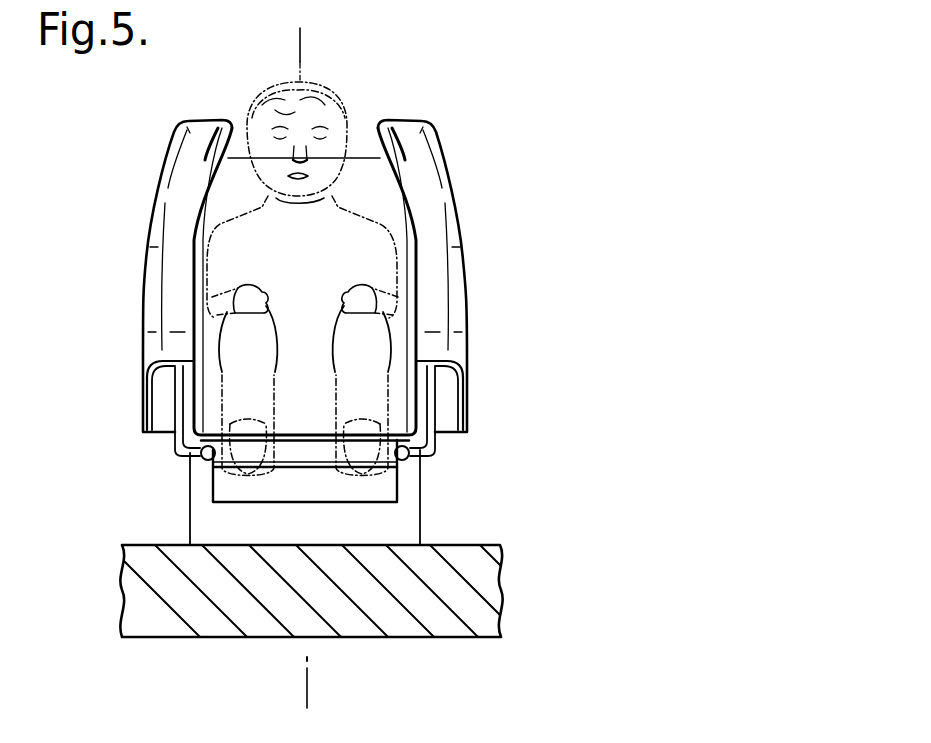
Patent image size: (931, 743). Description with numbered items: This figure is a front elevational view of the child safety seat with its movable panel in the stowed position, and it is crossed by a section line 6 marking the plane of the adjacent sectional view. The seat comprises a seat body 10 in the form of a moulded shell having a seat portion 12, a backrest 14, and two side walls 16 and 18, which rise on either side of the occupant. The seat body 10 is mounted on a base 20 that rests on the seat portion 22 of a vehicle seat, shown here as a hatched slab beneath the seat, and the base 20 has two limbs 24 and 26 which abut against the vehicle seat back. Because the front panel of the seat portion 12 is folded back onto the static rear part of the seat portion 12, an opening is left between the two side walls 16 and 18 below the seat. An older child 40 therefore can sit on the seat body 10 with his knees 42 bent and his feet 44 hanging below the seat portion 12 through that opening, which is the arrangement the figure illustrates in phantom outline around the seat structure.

The section line 6- 6 is at (290, 45).
The seat body 10 is at (464, 182).
The seat portion 12 is at (220, 433).
The backrest 14 is at (366, 170).
The side wall 16 is at (150, 262).
The side wall 18 is at (455, 260).
The base 20 is at (420, 524).
The seat portion of vehicle seat 22 is at (485, 591).
The limb 24 is at (188, 493).
The limb 26 is at (412, 487).
The older child 40 is at (252, 110).
The knees 42 is at (340, 325).
The feet 44 is at (358, 450).